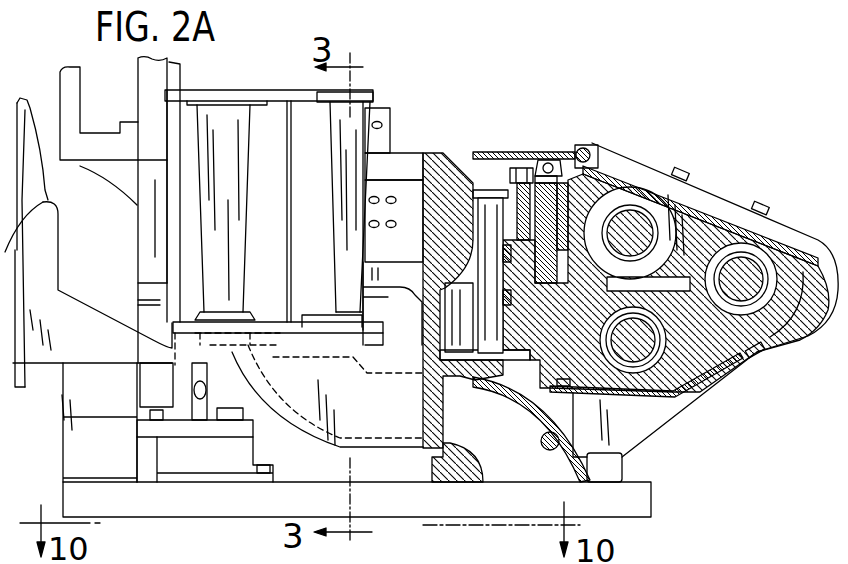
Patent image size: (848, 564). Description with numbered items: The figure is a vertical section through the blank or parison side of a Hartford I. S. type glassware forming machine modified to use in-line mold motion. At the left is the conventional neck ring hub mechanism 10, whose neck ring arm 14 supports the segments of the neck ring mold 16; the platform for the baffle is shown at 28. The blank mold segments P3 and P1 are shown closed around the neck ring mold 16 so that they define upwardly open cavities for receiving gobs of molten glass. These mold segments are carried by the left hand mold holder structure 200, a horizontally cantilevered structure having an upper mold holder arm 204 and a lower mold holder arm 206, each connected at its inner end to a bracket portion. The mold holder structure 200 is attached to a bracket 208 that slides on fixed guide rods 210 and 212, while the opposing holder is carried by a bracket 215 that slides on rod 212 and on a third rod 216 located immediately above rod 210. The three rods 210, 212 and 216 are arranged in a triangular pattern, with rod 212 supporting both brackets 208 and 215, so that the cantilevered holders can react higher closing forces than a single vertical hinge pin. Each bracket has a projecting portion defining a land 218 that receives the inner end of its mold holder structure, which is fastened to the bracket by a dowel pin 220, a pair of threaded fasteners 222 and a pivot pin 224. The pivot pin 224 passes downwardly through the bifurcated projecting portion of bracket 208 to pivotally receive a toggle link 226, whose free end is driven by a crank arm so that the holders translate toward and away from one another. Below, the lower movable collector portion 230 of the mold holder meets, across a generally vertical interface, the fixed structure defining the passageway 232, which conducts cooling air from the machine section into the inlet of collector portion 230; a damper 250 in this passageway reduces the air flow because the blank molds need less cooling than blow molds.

The neck ring hub mechanism 10 is at (30, 117).
The neck ring arm 14 is at (93, 365).
The neck ring mold 16 is at (267, 312).
The baffle platform 28 is at (178, 80).
The blank mold segment P3 is at (272, 92).
The blank mold segment P1 is at (370, 94).
The left hand mold holder structure 200 is at (430, 153).
The upper mold holder arm 204 is at (393, 152).
The lower mold holder arm 206 is at (405, 283).
The bracket 208 is at (708, 372).
The guide rod 210 is at (615, 394).
The guide rod 212 is at (787, 335).
The bracket 215 is at (706, 208).
The guide rod 216 is at (632, 210).
The land 218 is at (550, 212).
The dowel pin 220 is at (575, 162).
The threaded fastener 222 is at (518, 166).
The pivot pin 224 is at (482, 188).
The toggle link 226 is at (472, 312).
The movable collector portion 230 is at (365, 446).
The fixed outlet passageway structure 232 is at (478, 458).
The damper 250 is at (518, 398).